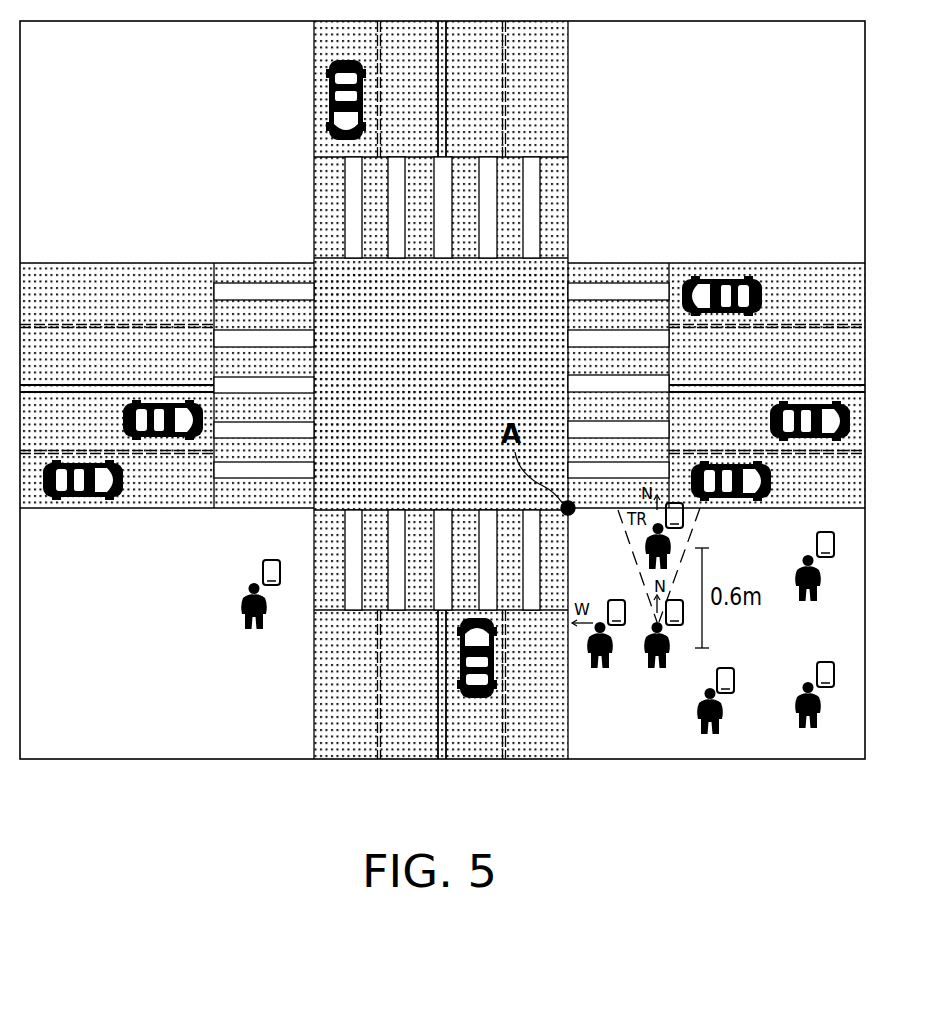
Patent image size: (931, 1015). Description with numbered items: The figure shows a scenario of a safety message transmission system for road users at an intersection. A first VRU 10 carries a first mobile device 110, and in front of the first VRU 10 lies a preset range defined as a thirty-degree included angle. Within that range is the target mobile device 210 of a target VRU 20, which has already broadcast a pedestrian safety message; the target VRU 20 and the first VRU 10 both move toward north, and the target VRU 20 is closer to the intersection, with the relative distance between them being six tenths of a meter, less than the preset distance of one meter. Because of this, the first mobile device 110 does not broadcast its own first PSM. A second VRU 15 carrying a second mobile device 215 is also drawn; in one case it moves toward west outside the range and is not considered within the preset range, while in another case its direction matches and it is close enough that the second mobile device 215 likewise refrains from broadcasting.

The first VRU 10 is at (657, 667).
The second VRU 15 is at (602, 667).
The target VRU 20 is at (645, 540).
The first mobile device 110 is at (677, 627).
The target mobile device 210 is at (684, 513).
The second mobile device 215 is at (615, 600).